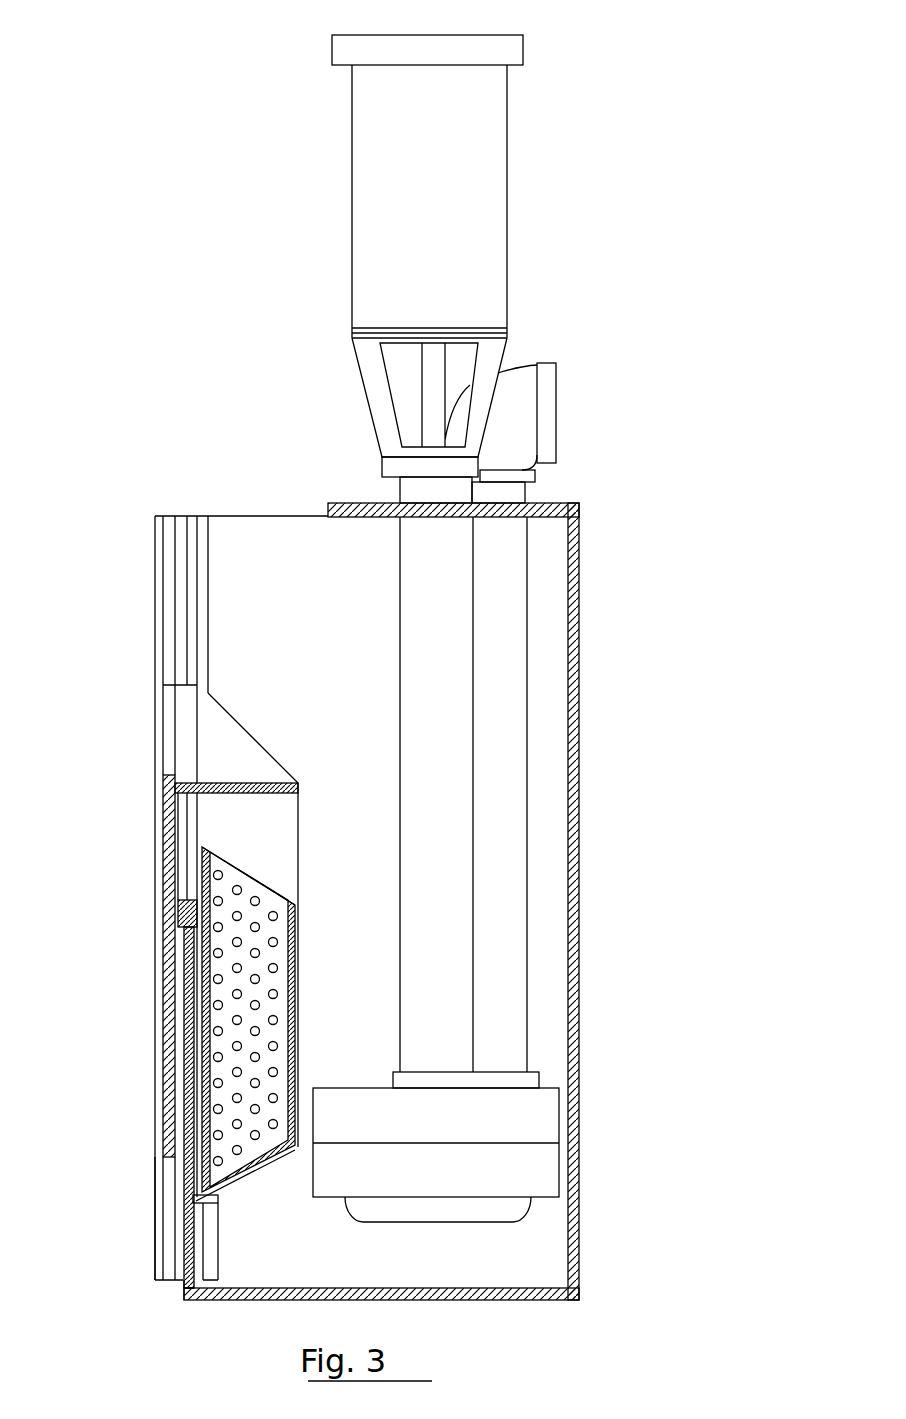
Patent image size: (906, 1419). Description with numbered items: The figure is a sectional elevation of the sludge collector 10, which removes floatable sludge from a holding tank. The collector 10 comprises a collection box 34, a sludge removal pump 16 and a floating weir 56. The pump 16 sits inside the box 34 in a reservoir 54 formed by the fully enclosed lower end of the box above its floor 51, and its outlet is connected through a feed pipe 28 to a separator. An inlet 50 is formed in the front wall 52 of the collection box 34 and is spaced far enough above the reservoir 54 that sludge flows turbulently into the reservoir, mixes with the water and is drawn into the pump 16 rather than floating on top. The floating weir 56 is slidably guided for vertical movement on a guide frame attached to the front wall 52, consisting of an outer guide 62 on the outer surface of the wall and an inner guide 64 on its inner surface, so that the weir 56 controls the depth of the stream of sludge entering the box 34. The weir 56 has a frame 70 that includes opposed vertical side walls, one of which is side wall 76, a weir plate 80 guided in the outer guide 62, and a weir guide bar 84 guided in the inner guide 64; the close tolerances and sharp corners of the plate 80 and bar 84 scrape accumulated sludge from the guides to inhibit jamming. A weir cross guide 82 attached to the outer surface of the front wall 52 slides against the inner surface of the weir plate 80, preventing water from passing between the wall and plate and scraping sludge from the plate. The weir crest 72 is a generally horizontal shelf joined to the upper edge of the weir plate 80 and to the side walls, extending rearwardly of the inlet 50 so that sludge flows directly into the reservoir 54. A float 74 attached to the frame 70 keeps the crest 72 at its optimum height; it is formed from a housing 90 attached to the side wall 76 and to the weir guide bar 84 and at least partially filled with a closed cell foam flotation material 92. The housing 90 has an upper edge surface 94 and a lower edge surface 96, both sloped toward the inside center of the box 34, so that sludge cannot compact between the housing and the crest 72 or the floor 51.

The sludge collector 10 is at (377, 667).
The sludge removal pump 16 is at (555, 1103).
The feed pipe 28 is at (556, 422).
The collection box 34 is at (583, 912).
The inlet 50 is at (180, 648).
The floor 51 is at (438, 1288).
The front wall 52 is at (185, 1272).
The reservoir 54 is at (553, 1218).
The floating weir 56 is at (299, 842).
The outer guide 62 is at (168, 1180).
The inner guide 64 is at (210, 1265).
The frame 70 is at (237, 690).
The weir crest 72 is at (263, 780).
The float 74 is at (299, 999).
The vertical side wall 76 is at (298, 890).
The weir plate 80 is at (167, 818).
The weir cross guide 82 is at (173, 908).
The weir guide bar 84 is at (217, 1200).
The housing 90 is at (302, 1018).
The flotation material 92 is at (262, 1081).
The upper edge surface 94 is at (237, 870).
The lower edge surface 96 is at (278, 1153).